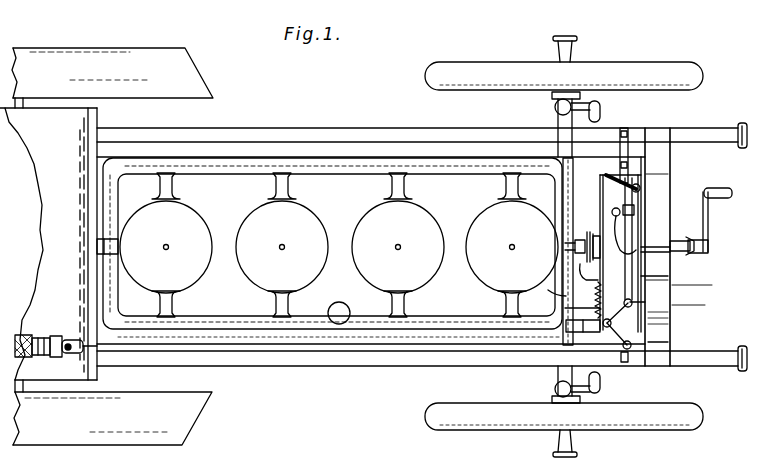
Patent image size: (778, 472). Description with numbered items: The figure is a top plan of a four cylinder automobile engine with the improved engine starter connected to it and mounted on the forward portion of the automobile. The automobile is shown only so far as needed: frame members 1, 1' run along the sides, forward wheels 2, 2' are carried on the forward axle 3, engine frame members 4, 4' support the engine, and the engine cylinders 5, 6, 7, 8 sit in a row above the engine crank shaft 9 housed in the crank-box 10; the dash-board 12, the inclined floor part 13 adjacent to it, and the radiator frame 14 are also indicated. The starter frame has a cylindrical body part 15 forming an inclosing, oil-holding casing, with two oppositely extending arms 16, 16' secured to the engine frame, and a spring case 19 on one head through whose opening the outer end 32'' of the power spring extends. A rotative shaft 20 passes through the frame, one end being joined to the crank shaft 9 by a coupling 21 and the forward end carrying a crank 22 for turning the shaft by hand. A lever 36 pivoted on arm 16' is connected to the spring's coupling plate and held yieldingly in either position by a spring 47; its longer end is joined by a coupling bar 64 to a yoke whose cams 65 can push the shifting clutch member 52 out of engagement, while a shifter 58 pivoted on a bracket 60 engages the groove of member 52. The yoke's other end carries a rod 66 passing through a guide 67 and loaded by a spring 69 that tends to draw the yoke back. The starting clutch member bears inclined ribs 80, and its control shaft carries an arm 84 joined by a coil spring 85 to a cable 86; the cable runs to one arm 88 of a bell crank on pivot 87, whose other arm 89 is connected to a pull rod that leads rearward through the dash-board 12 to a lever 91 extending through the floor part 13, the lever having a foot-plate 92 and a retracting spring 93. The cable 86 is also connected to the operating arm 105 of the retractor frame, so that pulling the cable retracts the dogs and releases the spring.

The frame member 1 is at (422, 132).
The frame member 1' is at (422, 370).
The forward wheel 2 is at (564, 63).
The forward wheel 2' is at (564, 430).
The forward axle 3 is at (556, 118).
The engine frame member 4 is at (667, 247).
The engine frame member 4' is at (677, 247).
The engine cylinder 5 is at (145, 222).
The engine cylinder 6 is at (260, 222).
The engine cylinder 7 is at (378, 218).
The engine cylinder 8 is at (492, 218).
The engine crank shaft 9 is at (100, 238).
The crank-box 10 is at (427, 187).
The dash-board 12 is at (97, 117).
The inclined floor part 13 is at (52, 235).
The radiator frame 14 is at (631, 303).
The cylindrical body part 15 is at (610, 222).
The arm 16 is at (709, 302).
The arm 16' is at (690, 171).
The spring case 19 is at (657, 279).
The rotative shaft 20 is at (681, 240).
The coupling 21 is at (568, 241).
The crank 22 is at (709, 222).
The outer end of power-spring 32'' is at (674, 244).
The lever 36 is at (614, 184).
The spring 47 is at (612, 157).
The shifting clutch member 52 is at (577, 235).
The shifter 58 is at (582, 268).
The bracket 60 is at (550, 290).
The coupling bar 64 is at (572, 205).
The cam 65 is at (618, 244).
The rod 66 is at (580, 338).
The guide 67 is at (598, 300).
The spring 69 is at (580, 316).
The inclined ribs 80 is at (405, 350).
The arm 84 is at (624, 303).
The coil spring 85 is at (633, 262).
The cable 86 is at (641, 287).
The pivot 87 is at (606, 328).
The bell crank arm 88 is at (707, 284).
The bell crank arm 89 is at (648, 342).
The lever 91 is at (70, 340).
The foot-plate 92 is at (22, 335).
The spring 93 is at (72, 355).
The operating arm 105 is at (638, 212).